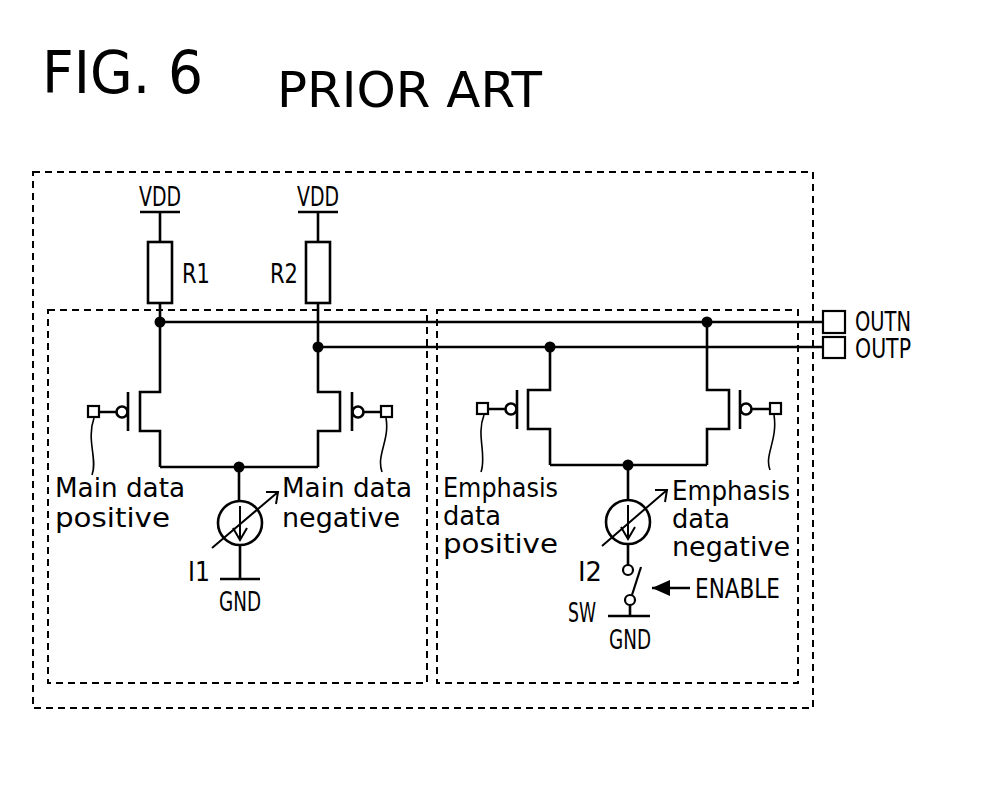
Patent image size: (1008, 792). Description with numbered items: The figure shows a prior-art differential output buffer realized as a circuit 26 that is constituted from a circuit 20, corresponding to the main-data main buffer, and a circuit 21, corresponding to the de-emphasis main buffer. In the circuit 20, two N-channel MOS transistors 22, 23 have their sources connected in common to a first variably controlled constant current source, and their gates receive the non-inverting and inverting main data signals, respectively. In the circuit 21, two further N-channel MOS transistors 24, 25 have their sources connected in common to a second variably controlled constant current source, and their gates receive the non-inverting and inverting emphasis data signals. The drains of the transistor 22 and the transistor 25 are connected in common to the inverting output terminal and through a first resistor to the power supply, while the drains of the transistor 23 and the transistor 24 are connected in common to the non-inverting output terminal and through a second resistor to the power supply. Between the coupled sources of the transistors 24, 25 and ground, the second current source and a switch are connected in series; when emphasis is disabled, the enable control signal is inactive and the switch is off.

The circuit 20 is at (362, 310).
The circuit 21 is at (465, 310).
The N-channel MOS transistor 22 is at (155, 410).
The N-channel MOS transistor 23 is at (317, 410).
The N-channel MOS transistor 24 is at (545, 413).
The N-channel MOS transistor 25 is at (715, 418).
The circuit 26 is at (790, 182).